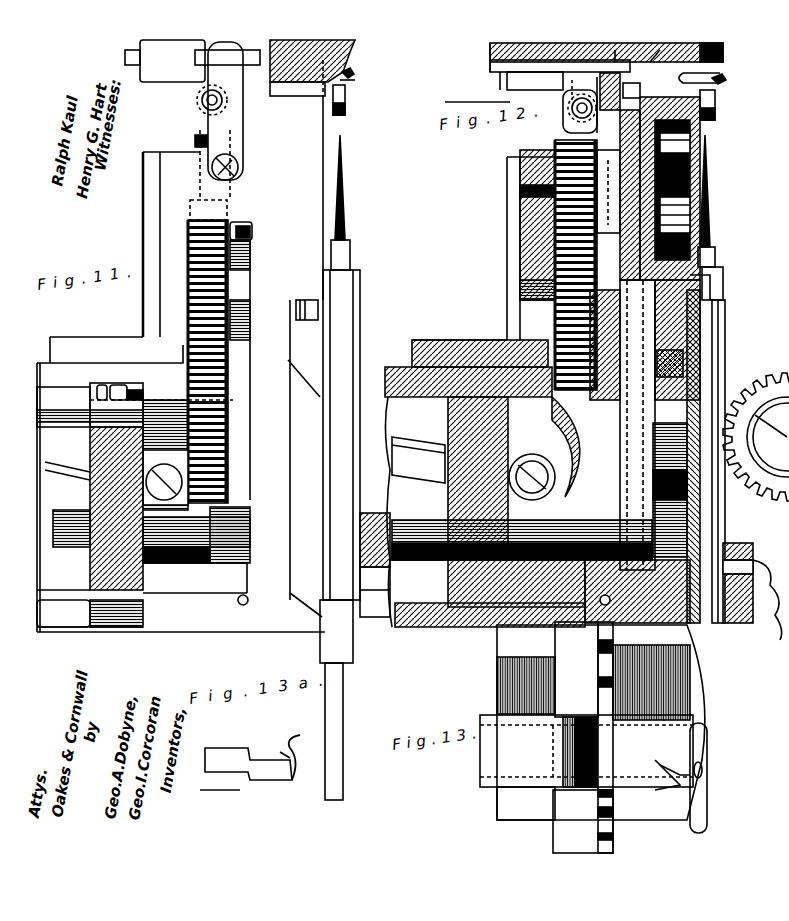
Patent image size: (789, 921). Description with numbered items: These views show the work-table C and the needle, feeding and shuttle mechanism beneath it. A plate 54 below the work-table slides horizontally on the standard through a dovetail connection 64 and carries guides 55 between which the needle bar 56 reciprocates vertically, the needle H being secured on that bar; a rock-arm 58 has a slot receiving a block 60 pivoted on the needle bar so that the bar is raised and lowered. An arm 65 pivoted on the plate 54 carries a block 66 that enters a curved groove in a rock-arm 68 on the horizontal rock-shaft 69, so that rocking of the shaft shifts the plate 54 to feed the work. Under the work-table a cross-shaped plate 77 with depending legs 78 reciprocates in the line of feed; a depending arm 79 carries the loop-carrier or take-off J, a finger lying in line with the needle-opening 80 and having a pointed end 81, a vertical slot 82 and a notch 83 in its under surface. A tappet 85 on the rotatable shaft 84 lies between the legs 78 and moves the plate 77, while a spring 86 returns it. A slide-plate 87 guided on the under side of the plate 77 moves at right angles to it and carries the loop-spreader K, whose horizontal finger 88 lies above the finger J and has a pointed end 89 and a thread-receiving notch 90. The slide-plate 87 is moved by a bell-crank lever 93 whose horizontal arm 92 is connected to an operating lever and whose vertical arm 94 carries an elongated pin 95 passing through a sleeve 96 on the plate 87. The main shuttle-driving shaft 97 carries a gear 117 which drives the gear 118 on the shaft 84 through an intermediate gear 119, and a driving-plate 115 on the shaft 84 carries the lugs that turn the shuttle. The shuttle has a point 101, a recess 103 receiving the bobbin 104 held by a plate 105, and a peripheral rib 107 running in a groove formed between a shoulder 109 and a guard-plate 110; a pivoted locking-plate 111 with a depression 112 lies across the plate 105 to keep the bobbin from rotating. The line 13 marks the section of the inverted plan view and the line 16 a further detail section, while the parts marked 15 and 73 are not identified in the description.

In FIG. 12, the section line 13 is at (768, 108).
In FIG. 12, the plate 15 is at (619, 44).
In FIG. 12, the section line 16 is at (607, 427).
In FIG. 11, the plate 54 is at (355, 297).
In FIG. 12, the plate 54 is at (725, 340).
In FIG. 13, the plate 54 is at (779, 850).
In FIG. 11, the guides 55 is at (360, 345).
In FIG. 12, the guides 55 is at (723, 305).
In FIG. 11, the needle plate or bar 56 is at (350, 255).
In FIG. 12, the needle plate or bar 56 is at (725, 360).
In FIG. 11, the rock-arm 58 is at (373, 617).
In FIG. 12, the rock-arm 58 is at (752, 569).
In FIG. 12, the block 60 is at (767, 600).
In FIG. 11, the dovetail connection 64 is at (300, 590).
In FIG. 12, the dovetail connection 64 is at (642, 456).
In FIG. 12, the arm 65 is at (670, 490).
In FIG. 12, the block 66 is at (650, 450).
In FIG. 11, the rock-arm 68 is at (250, 522).
In FIG. 12, the rock-arm 68 is at (622, 490).
In FIG. 11, the rock-shaft 69 is at (151, 536).
In FIG. 12, the rock-shaft 69 is at (522, 540).
In FIG. 12, the collar 73 is at (669, 550).
In FIG. 11, the plate 77 is at (200, 58).
In FIG. 12, the plate 77 is at (510, 45).
In FIG. 13, the plate 77 is at (576, 669).
In FIG. 11, the depending legs 78 is at (252, 235).
In FIG. 12, the depending legs 78 is at (503, 258).
In FIG. 13, the depending legs 78 is at (610, 685).
In FIG. 11, the arm 79 is at (345, 95).
In FIG. 12, the arm 79 is at (715, 100).
In FIG. 13, the arm 79 is at (700, 825).
In FIG. 12, the needle-opening 80 is at (723, 52).
In FIG. 13, the needle-opening 80 is at (707, 722).
In FIG. 13, the pointed end 81 is at (707, 745).
In FIG. 13, the vertical slot 82 is at (707, 775).
In FIG. 13, the notch 83 is at (685, 790).
In FIG. 12, the rotatable shaft 84 is at (540, 175).
In FIG. 12, the cam-arm or tappet 85 is at (545, 225).
In FIG. 11, the spring 86 is at (242, 108).
In FIG. 12, the slide-plate 87 is at (500, 100).
In FIG. 13, the slide-plate 87 is at (586, 751).
In FIG. 11, the horizontal finger 88 is at (352, 70).
In FIG. 13A, the horizontal finger 88 is at (261, 765).
In FIG. 12, the horizontal finger 88 is at (728, 85).
In FIG. 13, the horizontal finger 88 is at (702, 768).
In FIG. 13A, the pointed end 89 is at (304, 745).
In FIG. 13A, the thread-receiving notch 90 is at (282, 752).
In FIG. 11, the horizontal arm 92 is at (181, 484).
In FIG. 12, the horizontal arm 92 is at (485, 483).
In FIG. 11, the bell-crank lever 93 is at (225, 450).
In FIG. 12, the bell-crank lever 93 is at (544, 448).
In FIG. 11, the vertical arm 94 is at (236, 125).
In FIG. 12, the vertical arm 94 is at (575, 120).
In FIG. 11, the elongated pin 95 is at (200, 100).
In FIG. 12, the elongated pin 95 is at (576, 111).
In FIG. 11, the sleeve 96 is at (210, 110).
In FIG. 12, the sleeve 96 is at (560, 140).
In FIG. 13, the sleeve 96 is at (570, 750).
In FIG. 11, the main shuttle-driving shaft 97 is at (90, 405).
In FIG. 12, the main shuttle-driving shaft 97 is at (757, 462).
In FIG. 12, the point 101 is at (687, 320).
In FIG. 12, the recess 103 is at (690, 228).
In FIG. 12, the bobbin 104 is at (708, 158).
In FIG. 12, the plate 105 is at (700, 138).
In FIG. 12, the rib 107 is at (665, 44).
In FIG. 12, the shoulder 109 is at (715, 262).
In FIG. 12, the guard-plate 110 is at (723, 285).
In FIG. 13, the guard-plate 110 is at (777, 767).
In FIG. 12, the locking-plate 111 is at (710, 188).
In FIG. 12, the depression 112 is at (710, 175).
In FIG. 12, the driving-plate 115 is at (540, 285).
In FIG. 11, the gear 117 is at (230, 410).
In FIG. 11, the gear 118 is at (200, 145).
In FIG. 12, the gear 118 is at (520, 170).
In FIG. 11, the intermediate gear 119 is at (230, 280).
In FIG. 12, the intermediate gear 119 is at (513, 325).
In FIG. 11, the work-table C is at (312, 68).
In FIG. 12, the work-table C is at (495, 42).
In FIG. 13, the work-table C is at (520, 688).
In FIG. 11, the needle H is at (344, 190).
In FIG. 12, the needle H is at (712, 205).
In FIG. 11, the loop-carrier or take-off J is at (345, 115).
In FIG. 12, the loop-carrier or take-off J is at (715, 120).
In FIG. 13, the loop-carrier or take-off J is at (707, 800).
In FIG. 11, the loop-spreader K is at (352, 76).
In FIG. 13A, the loop-spreader K is at (220, 783).
In FIG. 12, the loop-spreader K is at (720, 78).
In FIG. 13, the loop-spreader K is at (707, 790).